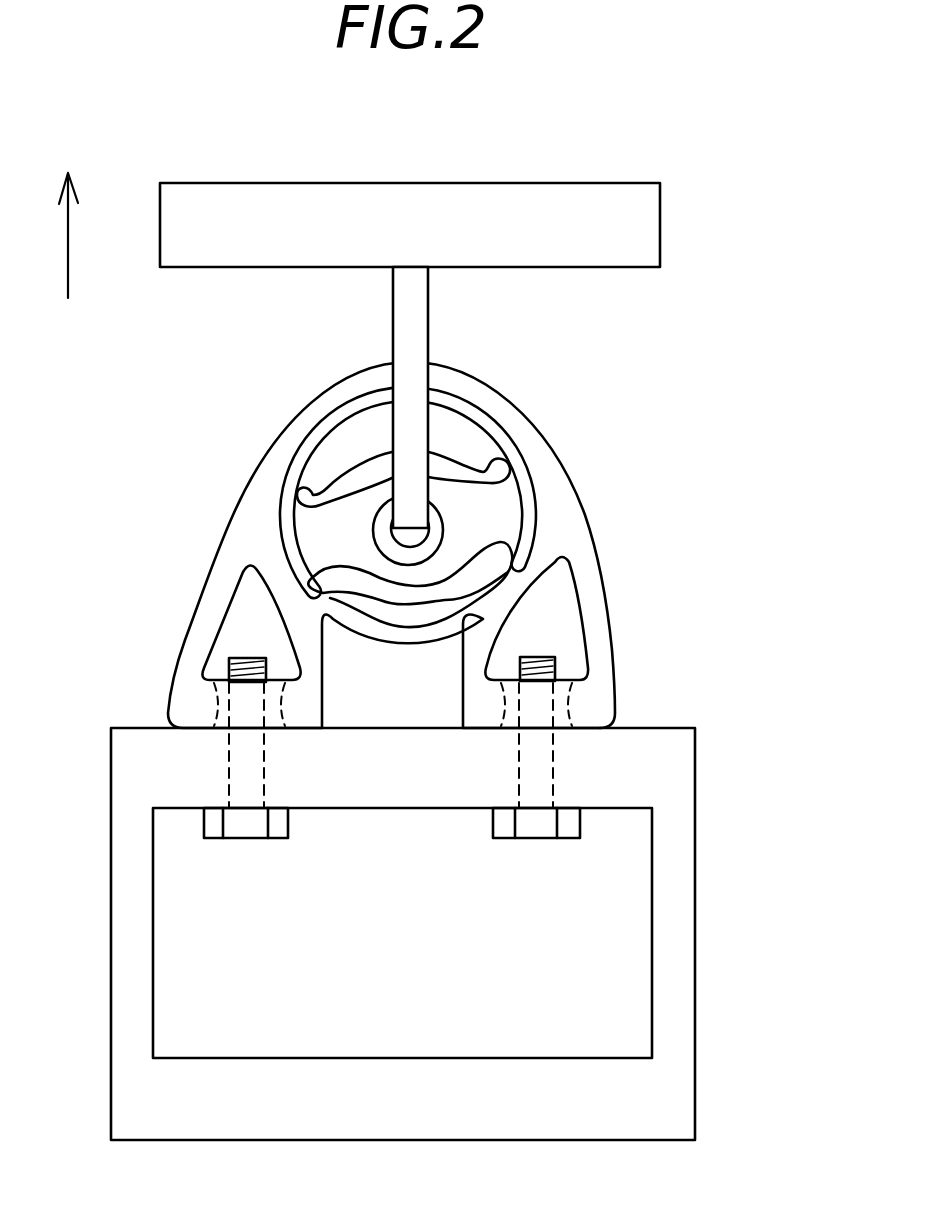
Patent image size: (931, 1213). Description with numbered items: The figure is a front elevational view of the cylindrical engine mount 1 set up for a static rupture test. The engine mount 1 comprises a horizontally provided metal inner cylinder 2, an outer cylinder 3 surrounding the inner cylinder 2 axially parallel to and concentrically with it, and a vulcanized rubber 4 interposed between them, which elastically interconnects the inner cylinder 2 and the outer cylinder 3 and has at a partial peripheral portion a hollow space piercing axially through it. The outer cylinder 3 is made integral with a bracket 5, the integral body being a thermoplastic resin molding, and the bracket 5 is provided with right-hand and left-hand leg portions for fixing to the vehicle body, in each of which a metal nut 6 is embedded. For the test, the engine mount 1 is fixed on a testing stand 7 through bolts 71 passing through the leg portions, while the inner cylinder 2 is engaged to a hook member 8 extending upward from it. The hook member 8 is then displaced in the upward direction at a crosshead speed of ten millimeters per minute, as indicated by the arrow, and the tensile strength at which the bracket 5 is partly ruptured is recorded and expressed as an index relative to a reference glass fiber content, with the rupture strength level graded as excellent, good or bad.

The engine mount 1 is at (580, 455).
The inner cylinder 2 is at (437, 535).
The outer cylinder 3 is at (313, 445).
The vulcanized rubber 4 is at (313, 540).
The bracket 5 is at (598, 597).
The nut 6 is at (215, 703).
The testing stand 7 is at (685, 988).
The bolt 71 is at (250, 838).
The hook member 8 is at (413, 332).